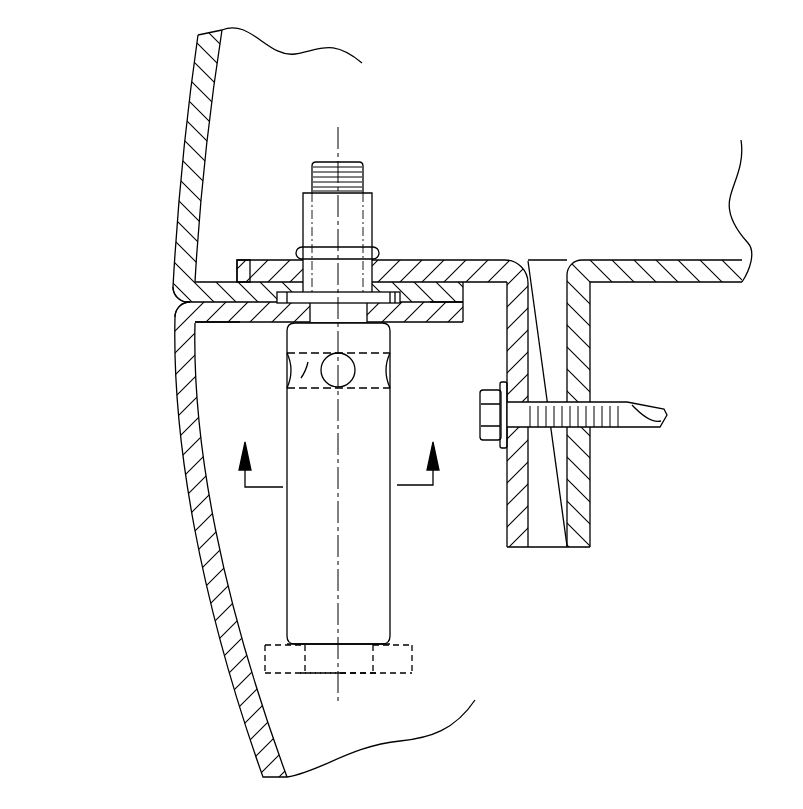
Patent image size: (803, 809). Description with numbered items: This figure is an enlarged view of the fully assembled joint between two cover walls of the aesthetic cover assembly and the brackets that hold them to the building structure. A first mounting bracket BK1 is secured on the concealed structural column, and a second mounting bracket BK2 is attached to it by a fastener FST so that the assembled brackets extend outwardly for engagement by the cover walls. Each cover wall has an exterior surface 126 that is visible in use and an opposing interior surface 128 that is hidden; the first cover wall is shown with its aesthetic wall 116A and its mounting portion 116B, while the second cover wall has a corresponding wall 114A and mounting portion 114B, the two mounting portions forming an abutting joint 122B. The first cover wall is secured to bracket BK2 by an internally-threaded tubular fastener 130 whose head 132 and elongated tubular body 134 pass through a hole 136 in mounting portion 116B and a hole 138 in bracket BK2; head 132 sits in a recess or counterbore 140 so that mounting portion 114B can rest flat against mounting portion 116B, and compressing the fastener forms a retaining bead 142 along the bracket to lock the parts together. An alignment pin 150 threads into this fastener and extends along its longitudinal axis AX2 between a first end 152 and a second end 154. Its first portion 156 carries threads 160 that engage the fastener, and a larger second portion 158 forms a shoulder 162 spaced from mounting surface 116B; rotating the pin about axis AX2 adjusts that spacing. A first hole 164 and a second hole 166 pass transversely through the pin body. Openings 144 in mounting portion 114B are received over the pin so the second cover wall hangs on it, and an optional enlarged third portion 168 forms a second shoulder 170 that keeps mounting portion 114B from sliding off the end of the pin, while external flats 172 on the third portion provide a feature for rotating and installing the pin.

The exterior surface 126 is at (193, 95).
The interior surface 128 is at (212, 100).
The wall of upper panel 116A is at (190, 132).
The mounting portion of cover wall 116 116B is at (440, 287).
The wall of lower panel 114A is at (240, 698).
The mounting portion of cover wall 114 114B is at (455, 310).
The joint between panels 122B is at (175, 305).
The first end of alignment pin 152 is at (358, 152).
The internally-threaded tubular fastener 130 is at (354, 220).
The elongated tubular body 134 is at (355, 203).
The threads 160 is at (320, 175).
The retaining bead 142 is at (298, 250).
The head 132 is at (297, 295).
The hole 138 is at (400, 260).
The recess or counterbore 140 is at (237, 260).
The holes or openings 144 is at (280, 310).
The first portion 156 is at (396, 305).
The hole 136 is at (440, 308).
The alignment pin 150 is at (289, 483).
The second portion 158 is at (373, 527).
The shoulder 162 is at (308, 330).
The second hole 166 is at (305, 388).
The first hole 164 is at (357, 371).
The axis AX2 is at (342, 583).
The third portion 168 is at (265, 648).
The second shoulder 170 is at (400, 645).
The external flats 172 is at (388, 660).
The second end of alignment pin 154 is at (446, 640).
The first mounting bracket BK1 is at (688, 263).
The second mounting bracket BK2 is at (518, 525).
The fastener FST is at (633, 430).